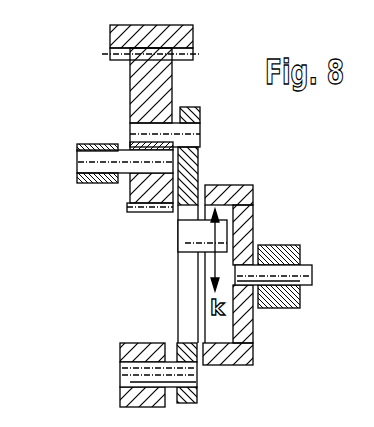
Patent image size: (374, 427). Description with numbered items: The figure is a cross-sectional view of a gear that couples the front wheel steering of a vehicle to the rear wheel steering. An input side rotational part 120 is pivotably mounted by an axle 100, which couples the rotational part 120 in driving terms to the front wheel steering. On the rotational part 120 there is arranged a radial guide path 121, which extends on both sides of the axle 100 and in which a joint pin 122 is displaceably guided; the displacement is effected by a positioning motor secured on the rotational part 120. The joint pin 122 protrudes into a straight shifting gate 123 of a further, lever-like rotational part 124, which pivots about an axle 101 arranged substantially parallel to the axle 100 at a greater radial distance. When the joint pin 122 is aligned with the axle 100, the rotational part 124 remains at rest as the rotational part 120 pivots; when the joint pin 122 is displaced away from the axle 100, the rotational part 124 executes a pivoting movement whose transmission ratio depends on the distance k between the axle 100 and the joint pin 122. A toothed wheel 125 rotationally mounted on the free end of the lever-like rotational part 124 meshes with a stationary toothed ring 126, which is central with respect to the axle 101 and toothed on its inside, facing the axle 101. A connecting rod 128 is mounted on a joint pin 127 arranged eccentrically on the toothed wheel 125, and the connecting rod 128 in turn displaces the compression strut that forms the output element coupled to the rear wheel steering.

The axle 100 is at (308, 280).
The axle 101 is at (120, 372).
The input side rotational part 120 is at (232, 353).
The radial guide path 121 is at (253, 325).
The joint pin 122 is at (190, 235).
The straight shifting gate 123 is at (188, 299).
The lever-like rotational part 124 is at (201, 160).
The toothed wheel 125 is at (133, 80).
The stationary toothed ring 126 is at (111, 40).
The joint pin 127 is at (83, 162).
The connecting rod 128 is at (90, 145).